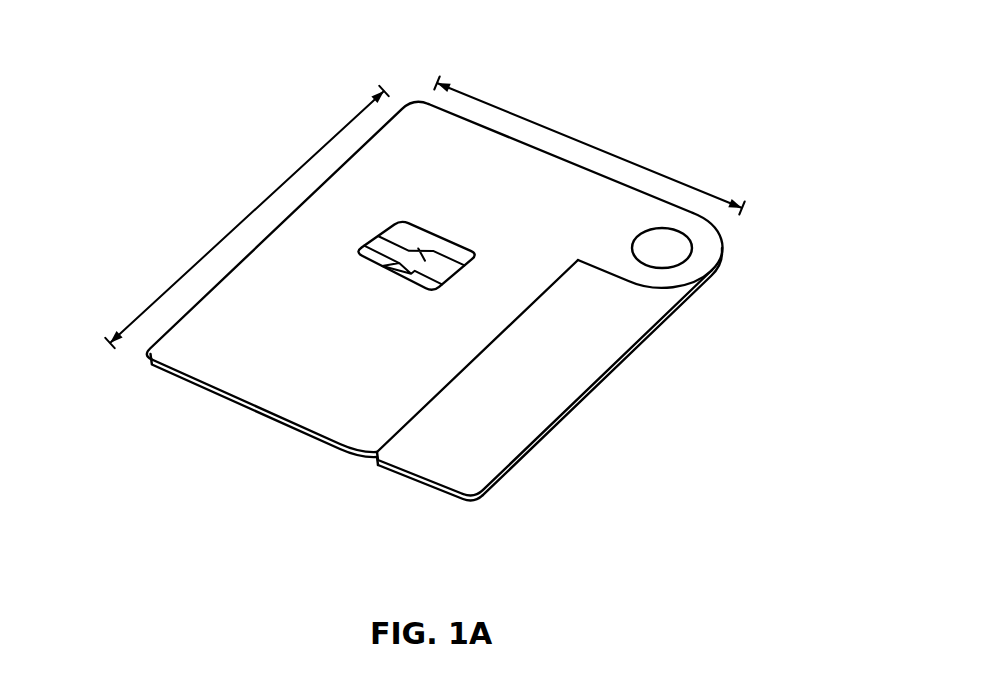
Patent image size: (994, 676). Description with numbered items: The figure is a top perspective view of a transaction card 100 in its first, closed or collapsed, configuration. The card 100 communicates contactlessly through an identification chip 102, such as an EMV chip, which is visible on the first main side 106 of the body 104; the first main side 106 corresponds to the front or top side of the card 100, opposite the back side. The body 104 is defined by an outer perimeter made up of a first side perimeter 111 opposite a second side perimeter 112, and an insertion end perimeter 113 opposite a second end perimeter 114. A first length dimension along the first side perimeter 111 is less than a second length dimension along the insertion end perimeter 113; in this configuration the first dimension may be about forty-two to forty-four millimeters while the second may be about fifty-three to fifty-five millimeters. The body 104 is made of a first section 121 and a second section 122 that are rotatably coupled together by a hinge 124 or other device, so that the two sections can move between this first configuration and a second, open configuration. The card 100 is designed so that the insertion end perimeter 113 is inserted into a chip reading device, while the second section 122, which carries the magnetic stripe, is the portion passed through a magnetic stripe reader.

The transaction card 100 is at (802, 53).
The identification chip 102 is at (433, 240).
The body 104 is at (348, 425).
The first main side 106 is at (255, 386).
The first side perimeter 111 is at (643, 192).
The second side perimeter 112 is at (283, 428).
The insertion end perimeter 113 is at (340, 169).
The second end perimeter 114 is at (638, 344).
The first section 121 is at (188, 362).
The second section 122 is at (525, 428).
The hinge 124 is at (672, 245).